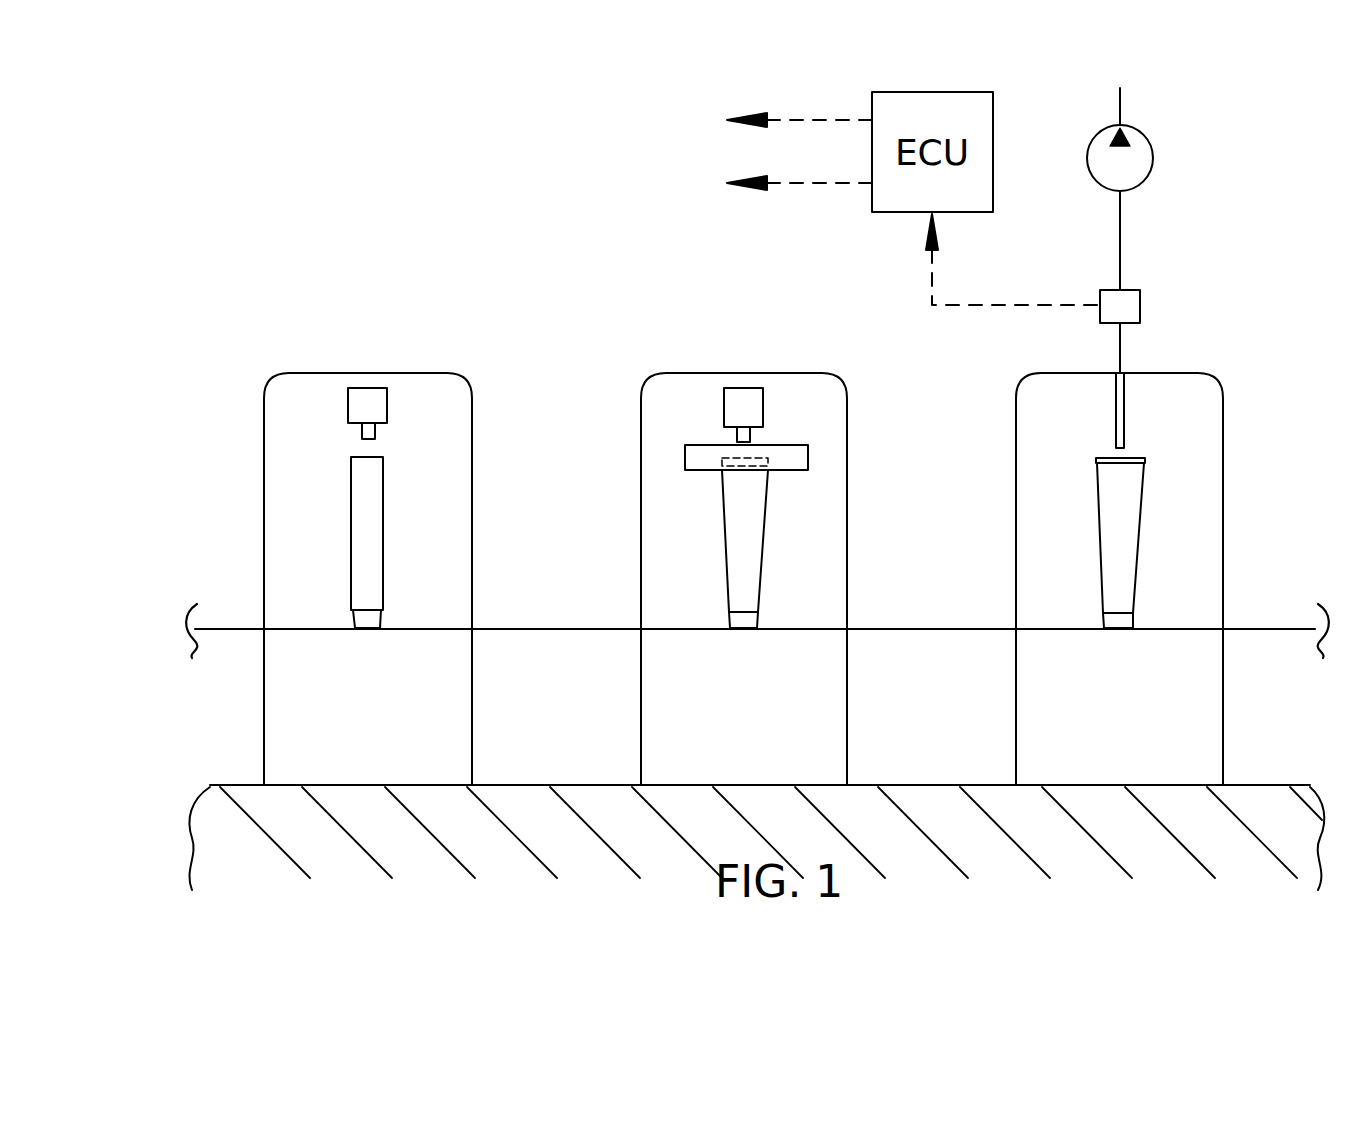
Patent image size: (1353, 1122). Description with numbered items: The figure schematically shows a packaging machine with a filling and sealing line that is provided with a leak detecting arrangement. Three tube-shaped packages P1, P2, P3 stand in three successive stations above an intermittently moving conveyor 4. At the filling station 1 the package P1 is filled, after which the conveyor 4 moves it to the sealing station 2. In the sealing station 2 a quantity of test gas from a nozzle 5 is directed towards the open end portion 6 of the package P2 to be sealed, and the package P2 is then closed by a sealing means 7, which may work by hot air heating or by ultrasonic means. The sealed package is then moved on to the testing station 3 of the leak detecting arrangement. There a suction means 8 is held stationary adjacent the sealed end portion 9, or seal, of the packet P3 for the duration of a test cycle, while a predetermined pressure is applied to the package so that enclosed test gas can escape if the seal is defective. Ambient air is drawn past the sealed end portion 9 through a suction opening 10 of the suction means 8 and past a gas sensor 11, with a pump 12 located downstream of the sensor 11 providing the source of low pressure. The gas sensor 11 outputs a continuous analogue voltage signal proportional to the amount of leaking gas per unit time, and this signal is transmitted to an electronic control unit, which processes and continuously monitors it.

The filling station 1 is at (350, 713).
The sealing station 2 is at (725, 713).
The testing station 3 is at (1100, 713).
The conveyor 4 is at (542, 628).
The nozzle 5 is at (742, 388).
The open end portion 6 is at (718, 438).
The sealing means 7 is at (695, 446).
The suction means 8 is at (1127, 415).
The sealed end portion 9 is at (1145, 459).
The suction opening 10 is at (1130, 447).
The gas sensor 11 is at (1140, 307).
The pump 12 is at (1153, 160).
The package P1 is at (360, 536).
The package P2 is at (738, 537).
The package P3 is at (1113, 538).